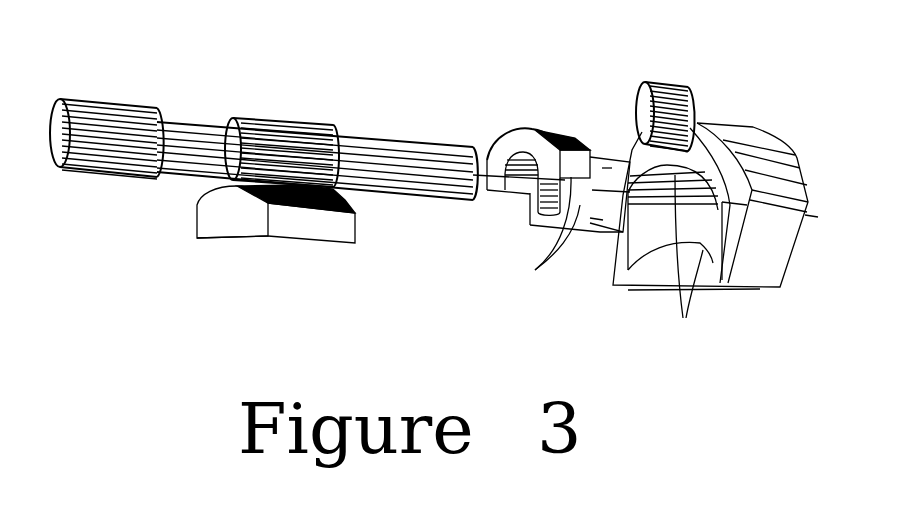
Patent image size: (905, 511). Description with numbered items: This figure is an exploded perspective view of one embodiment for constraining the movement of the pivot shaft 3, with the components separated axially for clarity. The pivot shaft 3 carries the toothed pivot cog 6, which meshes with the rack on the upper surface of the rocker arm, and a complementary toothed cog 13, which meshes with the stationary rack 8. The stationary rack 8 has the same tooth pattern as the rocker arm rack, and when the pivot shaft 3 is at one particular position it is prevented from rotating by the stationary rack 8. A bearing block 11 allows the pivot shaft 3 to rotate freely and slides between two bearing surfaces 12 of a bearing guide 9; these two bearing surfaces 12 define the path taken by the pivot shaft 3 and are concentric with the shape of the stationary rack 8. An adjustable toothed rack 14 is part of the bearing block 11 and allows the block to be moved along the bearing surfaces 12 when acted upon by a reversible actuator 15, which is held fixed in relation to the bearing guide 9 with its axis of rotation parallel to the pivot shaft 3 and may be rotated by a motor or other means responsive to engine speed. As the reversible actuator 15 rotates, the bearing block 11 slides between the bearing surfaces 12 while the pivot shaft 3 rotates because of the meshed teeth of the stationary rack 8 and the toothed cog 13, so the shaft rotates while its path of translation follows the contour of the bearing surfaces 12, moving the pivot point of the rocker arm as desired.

The pivot shaft 3 is at (420, 135).
The toothed pivot cog 6 is at (92, 100).
The stationary rack 8 is at (357, 215).
The bearing guide 9 is at (765, 158).
The bearing block 11 is at (536, 241).
The bearing surfaces 12 is at (703, 265).
The complementary toothed cog 13 is at (263, 118).
The adjustable toothed rack 14 is at (565, 130).
The reversible actuator 15 is at (655, 90).